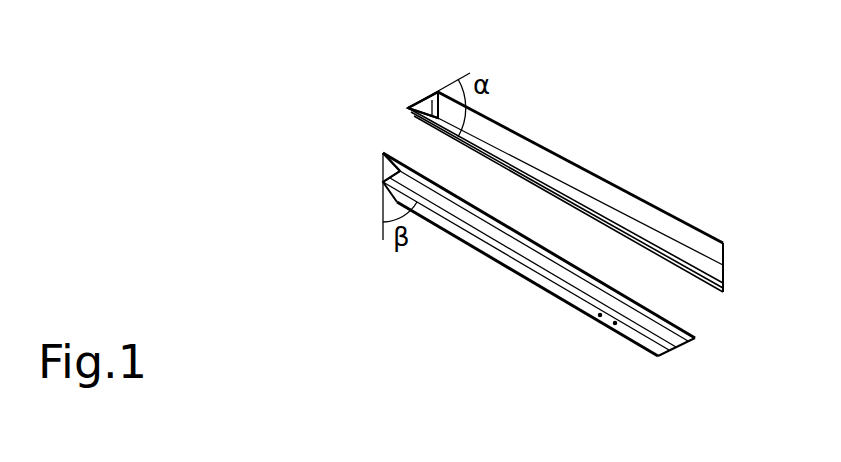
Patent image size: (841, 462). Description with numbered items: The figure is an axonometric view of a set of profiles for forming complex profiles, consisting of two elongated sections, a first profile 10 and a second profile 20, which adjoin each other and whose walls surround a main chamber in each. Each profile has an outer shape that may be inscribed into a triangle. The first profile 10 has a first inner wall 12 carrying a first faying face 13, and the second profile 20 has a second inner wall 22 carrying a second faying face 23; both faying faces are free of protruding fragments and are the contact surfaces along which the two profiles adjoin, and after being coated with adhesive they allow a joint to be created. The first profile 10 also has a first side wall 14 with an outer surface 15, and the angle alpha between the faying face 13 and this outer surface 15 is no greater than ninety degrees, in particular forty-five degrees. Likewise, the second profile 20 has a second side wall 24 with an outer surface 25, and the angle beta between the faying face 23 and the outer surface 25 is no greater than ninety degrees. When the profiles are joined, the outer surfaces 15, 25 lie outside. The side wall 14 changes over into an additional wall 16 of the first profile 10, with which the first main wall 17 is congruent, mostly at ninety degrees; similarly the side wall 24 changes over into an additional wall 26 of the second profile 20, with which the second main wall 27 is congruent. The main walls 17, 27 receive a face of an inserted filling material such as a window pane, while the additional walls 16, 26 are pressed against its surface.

The first profile 10 is at (523, 128).
The first inner wall 12 is at (530, 165).
The first faying face 13 is at (550, 195).
The first side wall 14 is at (408, 102).
The outer surface of the first side wall 15 is at (408, 105).
The additional wall of the first profile 16 is at (620, 194).
The first main wall 17 is at (640, 216).
The second profile 20 is at (478, 250).
The second inner wall 22 is at (540, 258).
The second faying face 23 is at (573, 286).
The second side wall 24 is at (383, 171).
The outer surface of the second side wall 25 is at (383, 165).
The additional wall of the second profile 26 is at (616, 325).
The second main wall 27 is at (575, 284).